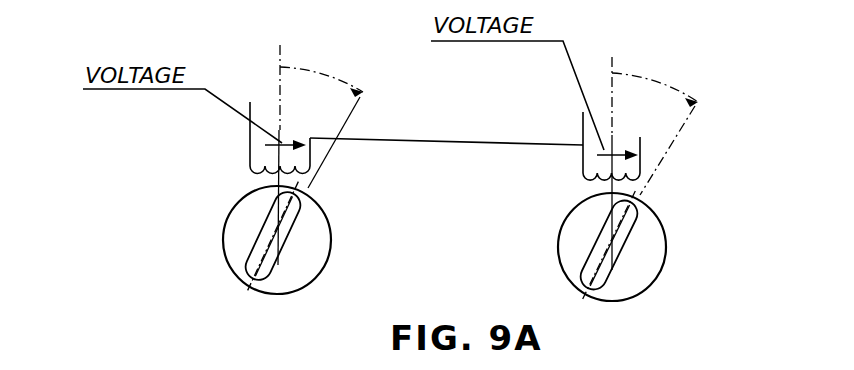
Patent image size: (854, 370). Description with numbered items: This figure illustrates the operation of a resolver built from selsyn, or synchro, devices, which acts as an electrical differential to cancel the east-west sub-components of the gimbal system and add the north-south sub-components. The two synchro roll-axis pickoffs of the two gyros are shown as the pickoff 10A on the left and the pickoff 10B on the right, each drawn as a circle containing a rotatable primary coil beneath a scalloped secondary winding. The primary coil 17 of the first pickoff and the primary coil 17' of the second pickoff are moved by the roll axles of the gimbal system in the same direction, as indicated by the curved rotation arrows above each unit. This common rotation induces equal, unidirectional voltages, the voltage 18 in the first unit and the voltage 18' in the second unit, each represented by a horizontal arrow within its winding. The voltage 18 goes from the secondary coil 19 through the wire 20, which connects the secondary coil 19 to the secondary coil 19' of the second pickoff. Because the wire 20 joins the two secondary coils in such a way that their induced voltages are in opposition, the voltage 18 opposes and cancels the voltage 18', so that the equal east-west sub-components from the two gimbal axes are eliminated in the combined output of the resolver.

The synchro roll-axis pickoff 10A is at (281, 169).
The synchro roll-axis pickoff 10B is at (637, 179).
The primary coil 17 is at (303, 236).
The primary coil 17' is at (638, 244).
The voltage 18 is at (292, 124).
The voltage 18' is at (629, 133).
The secondary coil 19 is at (303, 146).
The secondary coil 19' is at (584, 161).
The wire 20 is at (403, 140).